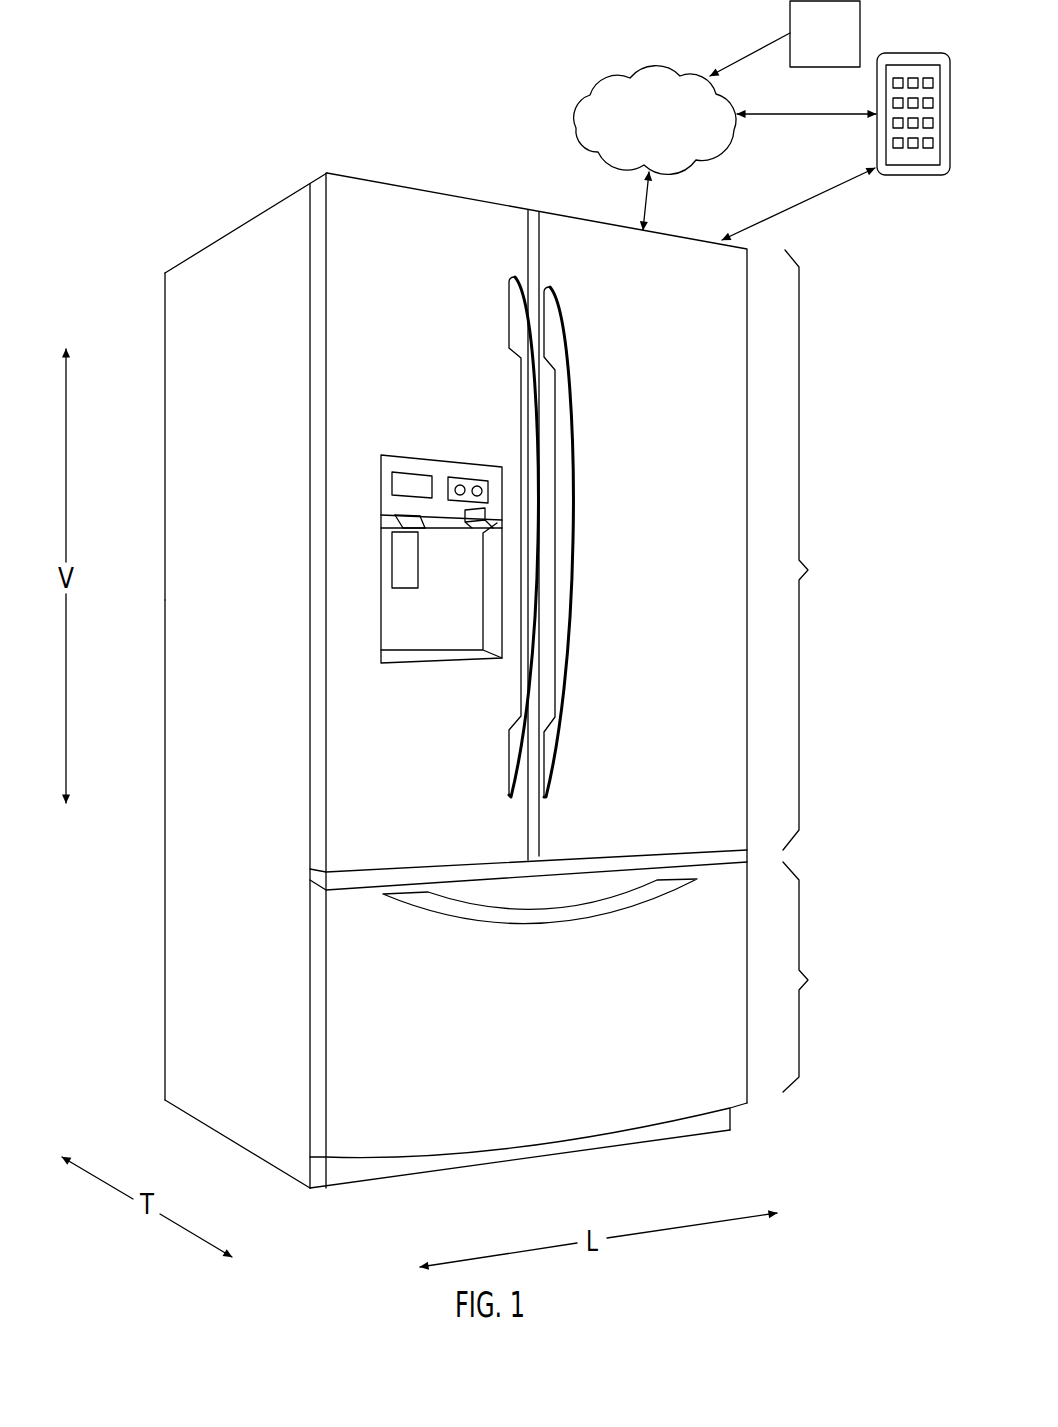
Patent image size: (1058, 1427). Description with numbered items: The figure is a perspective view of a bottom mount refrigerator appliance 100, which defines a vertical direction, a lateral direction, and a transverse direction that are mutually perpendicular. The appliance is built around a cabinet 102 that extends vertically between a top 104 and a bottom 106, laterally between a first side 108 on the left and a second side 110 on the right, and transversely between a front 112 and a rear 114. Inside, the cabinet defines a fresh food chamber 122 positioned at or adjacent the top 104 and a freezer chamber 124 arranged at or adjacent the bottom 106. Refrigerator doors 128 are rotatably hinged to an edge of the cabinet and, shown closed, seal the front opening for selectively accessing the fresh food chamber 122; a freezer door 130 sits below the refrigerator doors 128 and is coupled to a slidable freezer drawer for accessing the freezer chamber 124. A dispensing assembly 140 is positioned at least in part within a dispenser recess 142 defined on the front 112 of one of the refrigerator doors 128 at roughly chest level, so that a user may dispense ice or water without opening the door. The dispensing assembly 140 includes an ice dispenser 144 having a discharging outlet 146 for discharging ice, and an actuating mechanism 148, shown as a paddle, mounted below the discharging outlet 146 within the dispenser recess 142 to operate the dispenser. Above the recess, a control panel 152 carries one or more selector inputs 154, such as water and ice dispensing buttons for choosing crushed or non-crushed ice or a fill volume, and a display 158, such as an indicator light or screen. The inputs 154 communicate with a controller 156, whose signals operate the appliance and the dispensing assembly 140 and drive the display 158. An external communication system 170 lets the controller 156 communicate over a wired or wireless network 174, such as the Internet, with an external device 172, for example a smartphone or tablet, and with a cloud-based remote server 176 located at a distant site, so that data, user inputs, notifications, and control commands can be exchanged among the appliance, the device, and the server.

The refrigerator appliance 100 is at (268, 108).
The cabinet 102 is at (237, 265).
The top 104 is at (162, 272).
The bottom 106 is at (153, 1097).
The first side 108 is at (322, 1197).
The second side 110 is at (728, 1135).
The front 112 is at (305, 1192).
The rear 114 is at (163, 1105).
The fresh food chamber 122 is at (689, 535).
The freezer chamber 124 is at (580, 977).
The refrigerator doors 128 is at (411, 316).
The freezer door 130 is at (549, 1016).
The dispensing assembly 140 is at (390, 420).
The dispenser recess 142 is at (447, 652).
The ice dispenser 144 is at (387, 582).
The discharging outlet 146 is at (407, 525).
The actuating mechanism 148 is at (408, 570).
The control panel 152 is at (378, 478).
The selector inputs 154 is at (460, 486).
The controller 156 is at (489, 487).
The display 158 is at (411, 483).
The external communication system 170 is at (583, 62).
The external device 172 is at (915, 177).
The network 174 is at (631, 134).
The remote server 176 is at (806, 49).